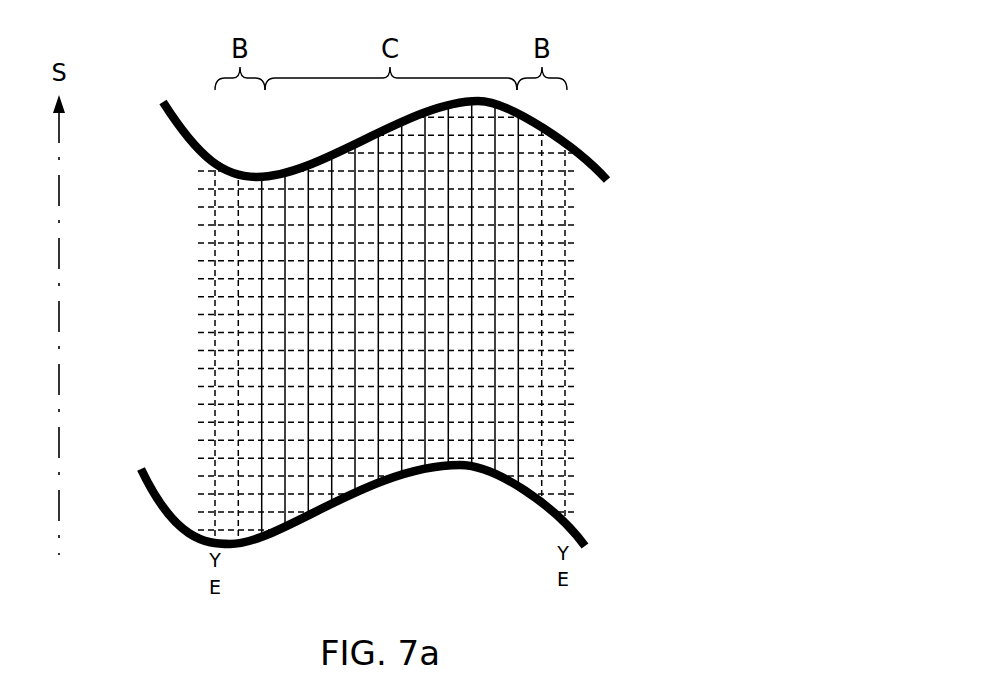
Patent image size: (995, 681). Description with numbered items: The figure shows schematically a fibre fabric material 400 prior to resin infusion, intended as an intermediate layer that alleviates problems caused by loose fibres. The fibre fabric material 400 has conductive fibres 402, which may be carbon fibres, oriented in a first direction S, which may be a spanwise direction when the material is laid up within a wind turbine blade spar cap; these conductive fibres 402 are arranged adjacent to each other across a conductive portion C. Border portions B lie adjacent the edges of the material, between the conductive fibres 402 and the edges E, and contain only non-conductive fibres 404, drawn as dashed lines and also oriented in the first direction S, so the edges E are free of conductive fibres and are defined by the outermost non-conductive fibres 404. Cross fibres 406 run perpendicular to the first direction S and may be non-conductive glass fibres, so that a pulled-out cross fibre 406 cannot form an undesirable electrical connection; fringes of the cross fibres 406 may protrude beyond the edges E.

The fibre fabric material 400 is at (588, 108).
The conductive fibres 402 is at (283, 482).
The non-conductive fibres 404 is at (563, 493).
The cross fibres 406 is at (552, 350).